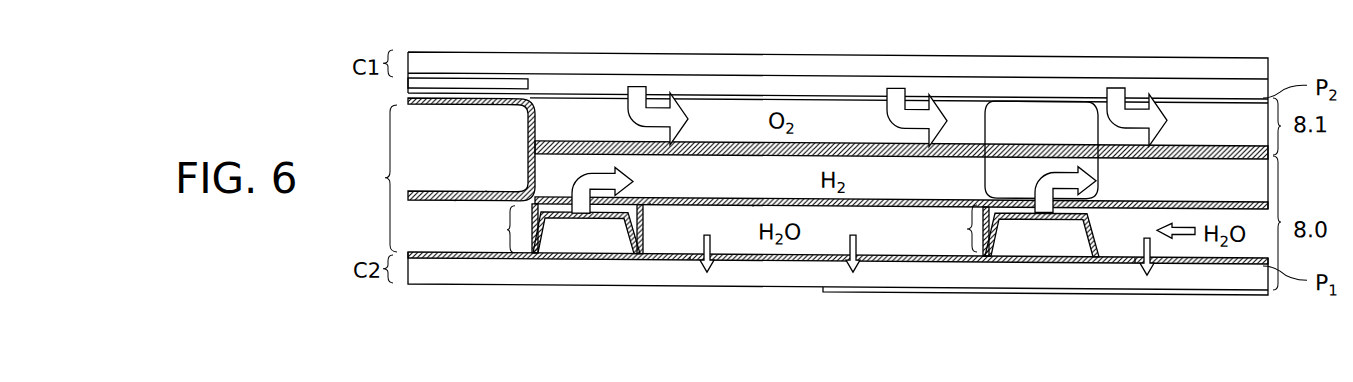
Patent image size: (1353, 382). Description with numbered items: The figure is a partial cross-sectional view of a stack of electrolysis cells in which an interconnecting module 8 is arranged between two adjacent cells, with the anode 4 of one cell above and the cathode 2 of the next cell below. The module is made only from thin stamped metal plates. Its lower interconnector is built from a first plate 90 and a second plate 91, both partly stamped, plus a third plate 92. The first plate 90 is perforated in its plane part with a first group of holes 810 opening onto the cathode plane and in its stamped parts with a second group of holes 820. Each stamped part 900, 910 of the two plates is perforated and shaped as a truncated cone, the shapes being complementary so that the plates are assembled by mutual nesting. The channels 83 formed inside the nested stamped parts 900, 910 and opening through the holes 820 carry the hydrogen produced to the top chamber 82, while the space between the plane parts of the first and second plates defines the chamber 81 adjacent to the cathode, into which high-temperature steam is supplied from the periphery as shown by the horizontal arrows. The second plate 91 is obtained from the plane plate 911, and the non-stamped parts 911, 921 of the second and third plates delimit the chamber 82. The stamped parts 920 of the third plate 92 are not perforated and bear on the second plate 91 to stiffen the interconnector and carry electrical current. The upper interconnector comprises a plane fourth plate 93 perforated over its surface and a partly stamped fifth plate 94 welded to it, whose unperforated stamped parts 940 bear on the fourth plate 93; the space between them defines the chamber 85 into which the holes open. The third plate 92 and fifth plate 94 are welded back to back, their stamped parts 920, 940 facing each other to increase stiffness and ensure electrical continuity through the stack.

The cathode 2 is at (1200, 285).
The anode 4 is at (940, 71).
The interconnecting module 8 is at (379, 178).
The chamber adjacent to the cathode plane 81 is at (690, 240).
The top chamber 82 is at (938, 188).
The channels 83 is at (724, 228).
The chamber of the second interconnector 85 is at (863, 129).
The first plate 90 is at (460, 256).
The second plate 91 is at (455, 201).
The third plate 92 is at (486, 190).
The fourth plate 93 is at (505, 99).
The fifth plate 94 is at (493, 103).
The first group of holes 810 is at (690, 256).
The second group of holes 820 is at (562, 212).
The stamped part of the first plate 900 is at (633, 237).
The stamped part of the second plate 910 is at (650, 201).
The plane plate of the second plate 911 is at (753, 204).
The stamped parts of the third plate 920 is at (1012, 186).
The non-stamped parts of the third plate 921 is at (722, 146).
The stamped parts of the fifth plate 940 is at (1060, 105).